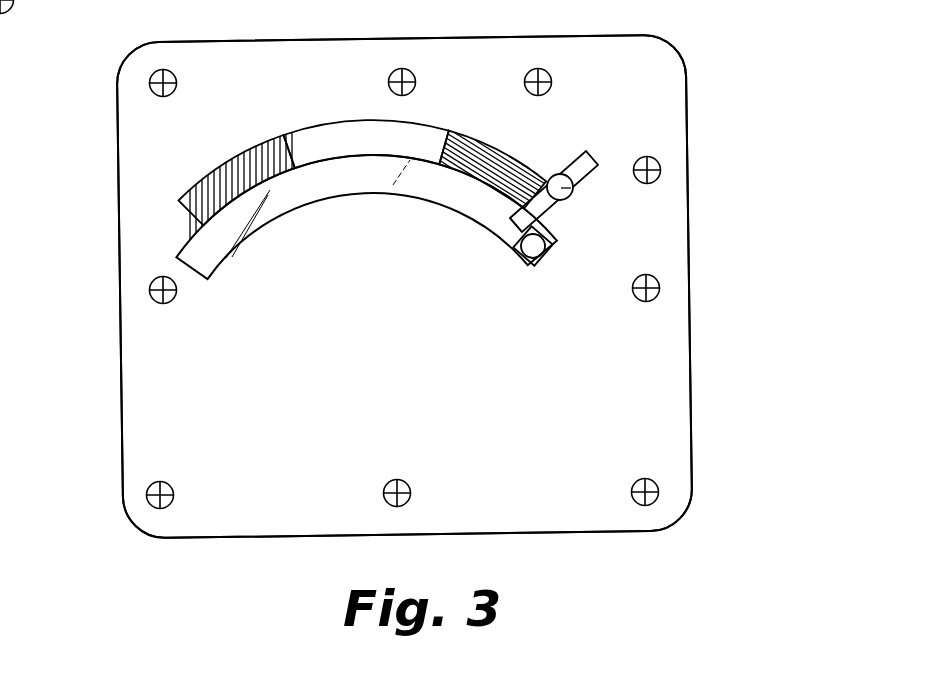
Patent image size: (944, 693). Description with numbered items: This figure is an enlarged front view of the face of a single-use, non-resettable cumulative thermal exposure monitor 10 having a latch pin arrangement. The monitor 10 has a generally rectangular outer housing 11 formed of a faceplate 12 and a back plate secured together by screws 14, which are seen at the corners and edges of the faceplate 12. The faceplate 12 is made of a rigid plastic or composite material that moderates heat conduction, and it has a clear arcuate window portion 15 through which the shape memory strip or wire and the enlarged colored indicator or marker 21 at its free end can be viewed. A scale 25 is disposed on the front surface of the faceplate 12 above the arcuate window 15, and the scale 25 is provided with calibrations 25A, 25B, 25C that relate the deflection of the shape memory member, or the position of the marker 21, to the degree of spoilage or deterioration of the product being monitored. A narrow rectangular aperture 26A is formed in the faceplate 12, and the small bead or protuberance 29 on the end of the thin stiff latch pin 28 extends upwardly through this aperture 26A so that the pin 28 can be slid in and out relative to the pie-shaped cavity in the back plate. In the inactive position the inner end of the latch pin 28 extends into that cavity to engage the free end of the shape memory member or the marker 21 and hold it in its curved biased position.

The cumulative thermal exposure monitor 10 is at (728, 203).
The outer housing 11 is at (120, 362).
The faceplate 12 is at (147, 402).
The screws 14 is at (172, 74).
The clear arcuate window portion 15 is at (362, 190).
The indicator or marker 21 is at (547, 255).
The scale 25 is at (297, 162).
The calibration 25A is at (470, 133).
The calibration 25B is at (416, 132).
The calibration 25C is at (176, 200).
The narrow rectangular aperture 26A is at (574, 162).
The latch pin 28 is at (517, 220).
The bead or protuberance 29 is at (573, 188).